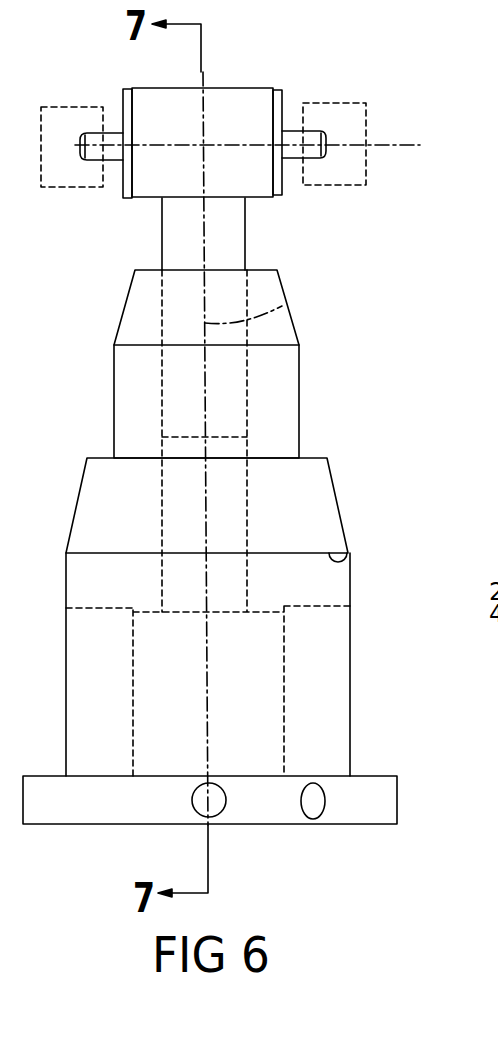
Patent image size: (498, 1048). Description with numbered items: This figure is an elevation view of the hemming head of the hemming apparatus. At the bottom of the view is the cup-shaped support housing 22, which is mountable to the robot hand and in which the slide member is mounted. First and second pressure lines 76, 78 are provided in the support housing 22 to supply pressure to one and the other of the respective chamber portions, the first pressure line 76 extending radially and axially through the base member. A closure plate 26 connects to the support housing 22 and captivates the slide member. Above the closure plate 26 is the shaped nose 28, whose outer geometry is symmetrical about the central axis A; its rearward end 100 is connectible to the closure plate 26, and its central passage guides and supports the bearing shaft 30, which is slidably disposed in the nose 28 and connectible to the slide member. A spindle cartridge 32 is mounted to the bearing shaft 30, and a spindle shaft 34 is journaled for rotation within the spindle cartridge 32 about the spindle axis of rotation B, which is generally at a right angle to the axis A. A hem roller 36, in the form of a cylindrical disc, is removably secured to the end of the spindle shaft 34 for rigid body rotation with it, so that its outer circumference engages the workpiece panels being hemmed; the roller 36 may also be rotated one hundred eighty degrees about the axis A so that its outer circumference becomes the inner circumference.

The support housing 22 is at (327, 651).
The closure plate 26 is at (352, 594).
The shaped nose 28 is at (296, 328).
The bearing shaft 30 is at (238, 250).
The spindle cartridge 32 is at (214, 100).
The spindle shaft 34 is at (292, 137).
The hem roller 36 is at (356, 102).
The first pressure line 76 is at (219, 806).
The second pressure line 78 is at (318, 804).
The rearward end 100 is at (350, 563).
The central axis A is at (282, 306).
The spindle axis of rotation B is at (414, 134).